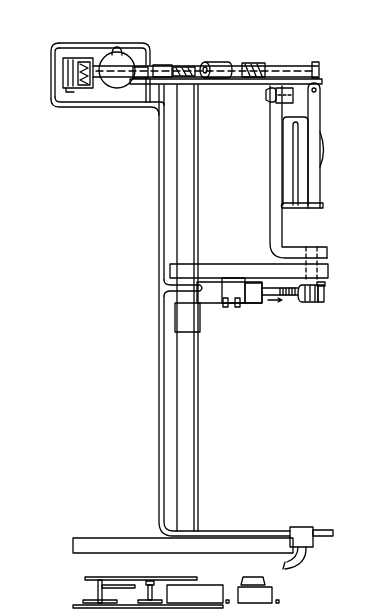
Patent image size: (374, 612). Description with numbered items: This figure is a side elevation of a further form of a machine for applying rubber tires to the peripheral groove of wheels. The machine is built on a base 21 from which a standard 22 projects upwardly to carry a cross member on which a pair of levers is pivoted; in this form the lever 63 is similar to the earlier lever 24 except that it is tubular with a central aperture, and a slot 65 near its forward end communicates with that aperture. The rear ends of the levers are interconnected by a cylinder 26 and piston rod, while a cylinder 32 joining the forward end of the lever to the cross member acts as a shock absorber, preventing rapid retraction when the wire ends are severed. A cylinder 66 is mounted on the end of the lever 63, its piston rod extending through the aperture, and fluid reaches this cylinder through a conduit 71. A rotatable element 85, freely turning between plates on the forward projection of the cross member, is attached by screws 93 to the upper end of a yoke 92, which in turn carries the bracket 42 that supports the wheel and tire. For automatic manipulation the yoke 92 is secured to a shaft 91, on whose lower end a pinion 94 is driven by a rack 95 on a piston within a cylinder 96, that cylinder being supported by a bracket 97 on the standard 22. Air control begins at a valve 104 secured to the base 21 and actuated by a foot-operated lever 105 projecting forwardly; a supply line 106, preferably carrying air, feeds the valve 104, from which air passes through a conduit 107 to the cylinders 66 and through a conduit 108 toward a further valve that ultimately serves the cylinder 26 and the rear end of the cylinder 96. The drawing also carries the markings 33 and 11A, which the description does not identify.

The conduit 108 is at (98, 44).
The conduit 71 is at (63, 72).
The cylinder 66 is at (70, 89).
The cylinder 26 is at (127, 60).
The lever 63 is at (284, 65).
The cylinder 32 is at (219, 62).
The slot 65 is at (317, 62).
The rotatable element 85 is at (321, 93).
The screws 93 is at (267, 97).
The bracket 42 is at (297, 164).
The yoke 92 is at (275, 203).
The adjustment member 33 is at (325, 263).
The column 11A is at (171, 208).
The standard 22 is at (197, 379).
The lever 24 is at (235, 272).
The cylinder 96 is at (250, 298).
The bracket 97 is at (222, 306).
The rack 95 is at (289, 298).
The pinion 94 is at (306, 303).
The shaft 91 is at (325, 289).
The conduit 107 is at (161, 402).
The base 21 is at (101, 539).
The valve 104 is at (300, 527).
The foot-operated lever 105 is at (329, 525).
The supply line 106 is at (310, 559).